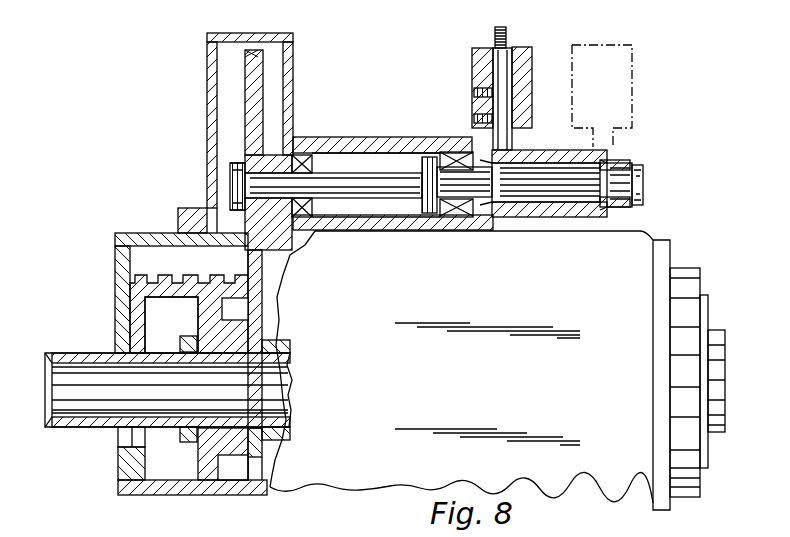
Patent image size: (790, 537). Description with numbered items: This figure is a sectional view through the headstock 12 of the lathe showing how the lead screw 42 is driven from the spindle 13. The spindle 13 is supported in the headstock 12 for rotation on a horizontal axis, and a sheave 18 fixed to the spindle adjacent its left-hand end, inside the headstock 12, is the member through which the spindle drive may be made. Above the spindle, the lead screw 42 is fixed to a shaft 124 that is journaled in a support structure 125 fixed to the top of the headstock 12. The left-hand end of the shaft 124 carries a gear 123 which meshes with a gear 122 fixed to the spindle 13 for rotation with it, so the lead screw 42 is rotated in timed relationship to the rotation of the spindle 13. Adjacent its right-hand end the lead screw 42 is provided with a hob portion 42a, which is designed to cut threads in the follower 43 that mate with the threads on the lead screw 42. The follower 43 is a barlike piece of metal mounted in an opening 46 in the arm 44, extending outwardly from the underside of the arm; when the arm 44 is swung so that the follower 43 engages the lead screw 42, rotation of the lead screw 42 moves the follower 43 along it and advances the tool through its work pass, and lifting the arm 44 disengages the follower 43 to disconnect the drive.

The headstock 12 is at (532, 311).
The spindle 13 is at (95, 430).
The sheave 18 is at (203, 308).
The lead screw 42 is at (558, 138).
The hob portion 42a is at (613, 153).
The follower 43 is at (518, 93).
The arm 44 is at (482, 47).
The opening 46 is at (488, 82).
The gear 122 is at (288, 442).
The gear 123 is at (257, 98).
The shaft 124 is at (643, 182).
The support structure 125 is at (403, 143).